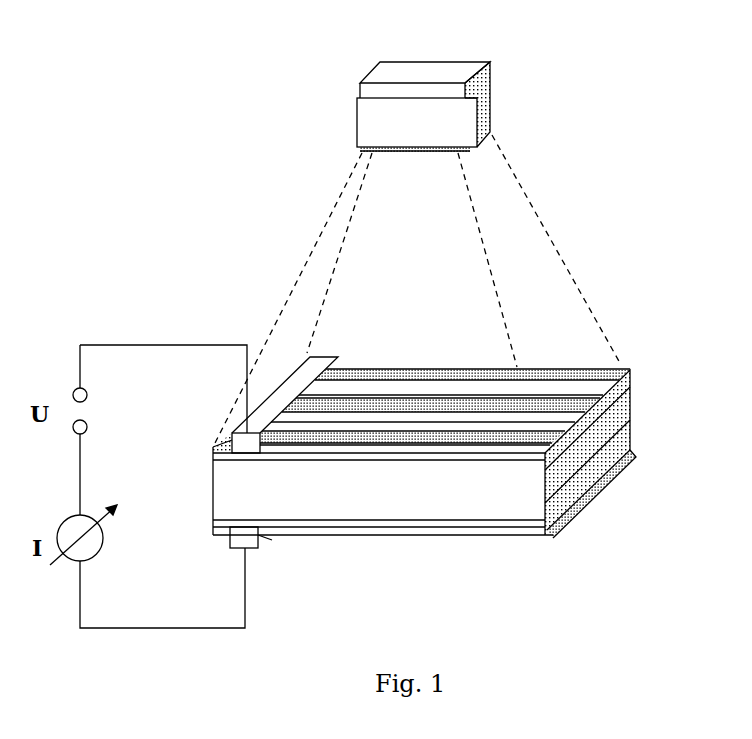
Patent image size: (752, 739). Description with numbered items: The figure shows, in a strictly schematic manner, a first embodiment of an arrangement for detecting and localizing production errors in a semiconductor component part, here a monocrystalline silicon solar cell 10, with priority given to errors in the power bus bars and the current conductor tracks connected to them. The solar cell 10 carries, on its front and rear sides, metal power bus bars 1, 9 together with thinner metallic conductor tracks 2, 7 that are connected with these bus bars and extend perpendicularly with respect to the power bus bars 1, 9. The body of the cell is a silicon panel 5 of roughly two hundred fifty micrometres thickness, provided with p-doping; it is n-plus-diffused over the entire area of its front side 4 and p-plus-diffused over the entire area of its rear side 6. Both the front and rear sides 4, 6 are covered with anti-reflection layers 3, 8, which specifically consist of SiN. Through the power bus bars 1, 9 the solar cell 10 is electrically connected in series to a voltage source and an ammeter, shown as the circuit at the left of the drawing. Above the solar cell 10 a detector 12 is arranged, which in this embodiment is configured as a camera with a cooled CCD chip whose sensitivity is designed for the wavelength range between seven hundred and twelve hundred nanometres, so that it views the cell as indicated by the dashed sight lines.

The power bus bar 1 is at (327, 353).
The conductor track 2 is at (367, 368).
The anti-reflection layer 3 is at (402, 368).
The front side 4 is at (631, 384).
The silicon panel 5 is at (631, 420).
The rear side 6 is at (631, 447).
The conductor track 7 is at (605, 480).
The anti-reflection layer 8 is at (333, 535).
The power bus bar 9 is at (242, 535).
The solar cell 10 is at (640, 330).
The detector 12 is at (425, 67).